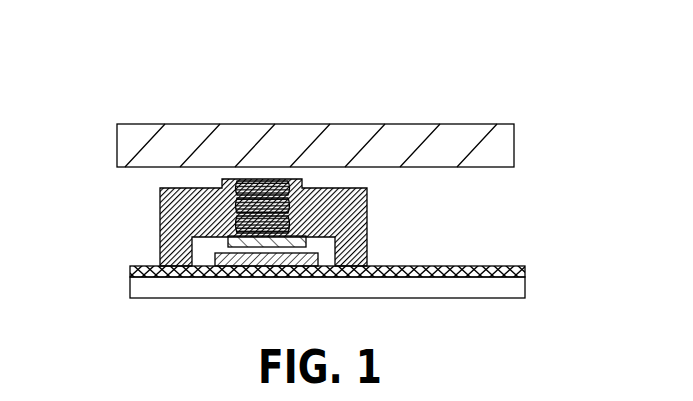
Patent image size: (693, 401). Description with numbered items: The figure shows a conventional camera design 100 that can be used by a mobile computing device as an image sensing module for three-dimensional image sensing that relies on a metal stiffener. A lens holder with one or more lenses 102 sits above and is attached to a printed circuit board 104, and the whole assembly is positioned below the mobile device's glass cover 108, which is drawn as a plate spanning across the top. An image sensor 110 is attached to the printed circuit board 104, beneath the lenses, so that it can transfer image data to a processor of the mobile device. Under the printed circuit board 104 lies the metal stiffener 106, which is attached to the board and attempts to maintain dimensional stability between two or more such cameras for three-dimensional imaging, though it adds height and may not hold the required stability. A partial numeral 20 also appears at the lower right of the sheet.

The conventional camera design 100 is at (456, 71).
The lens holder with one or more lenses 102 is at (367, 213).
The printed circuit board 104 is at (525, 268).
The metal stiffener 106 is at (520, 290).
The glass cover 108 is at (498, 145).
The image sensor 110 is at (215, 277).
The partial numeral 20 is at (673, 399).